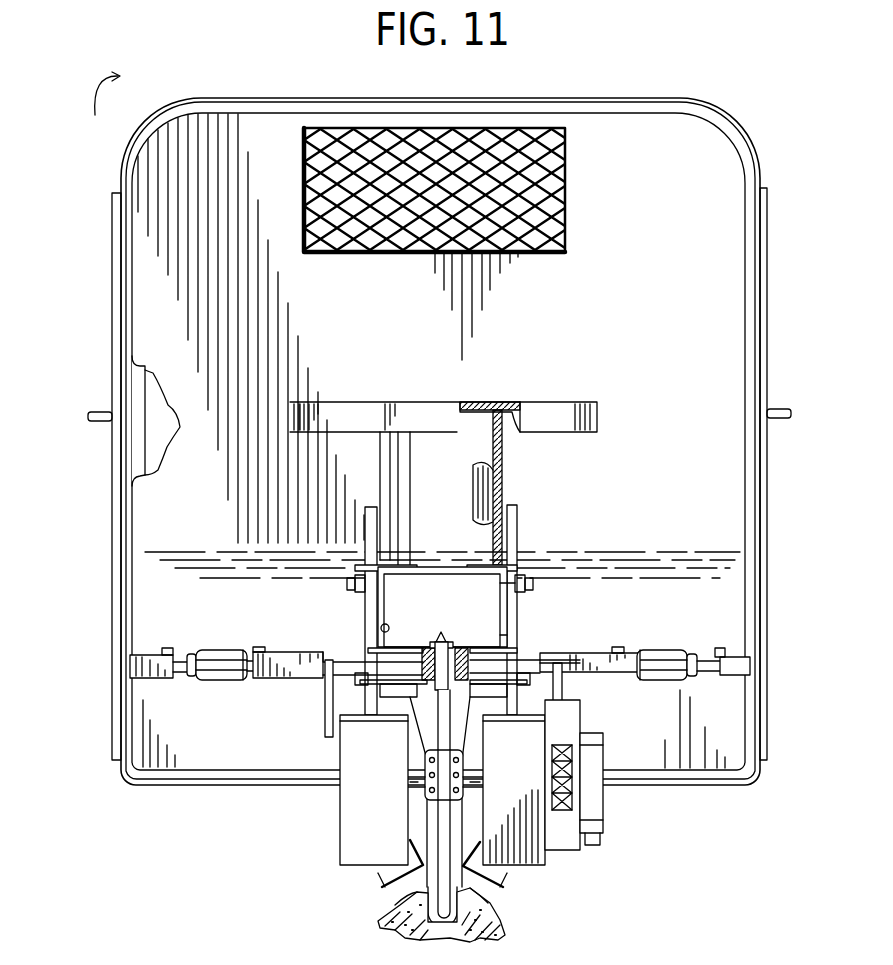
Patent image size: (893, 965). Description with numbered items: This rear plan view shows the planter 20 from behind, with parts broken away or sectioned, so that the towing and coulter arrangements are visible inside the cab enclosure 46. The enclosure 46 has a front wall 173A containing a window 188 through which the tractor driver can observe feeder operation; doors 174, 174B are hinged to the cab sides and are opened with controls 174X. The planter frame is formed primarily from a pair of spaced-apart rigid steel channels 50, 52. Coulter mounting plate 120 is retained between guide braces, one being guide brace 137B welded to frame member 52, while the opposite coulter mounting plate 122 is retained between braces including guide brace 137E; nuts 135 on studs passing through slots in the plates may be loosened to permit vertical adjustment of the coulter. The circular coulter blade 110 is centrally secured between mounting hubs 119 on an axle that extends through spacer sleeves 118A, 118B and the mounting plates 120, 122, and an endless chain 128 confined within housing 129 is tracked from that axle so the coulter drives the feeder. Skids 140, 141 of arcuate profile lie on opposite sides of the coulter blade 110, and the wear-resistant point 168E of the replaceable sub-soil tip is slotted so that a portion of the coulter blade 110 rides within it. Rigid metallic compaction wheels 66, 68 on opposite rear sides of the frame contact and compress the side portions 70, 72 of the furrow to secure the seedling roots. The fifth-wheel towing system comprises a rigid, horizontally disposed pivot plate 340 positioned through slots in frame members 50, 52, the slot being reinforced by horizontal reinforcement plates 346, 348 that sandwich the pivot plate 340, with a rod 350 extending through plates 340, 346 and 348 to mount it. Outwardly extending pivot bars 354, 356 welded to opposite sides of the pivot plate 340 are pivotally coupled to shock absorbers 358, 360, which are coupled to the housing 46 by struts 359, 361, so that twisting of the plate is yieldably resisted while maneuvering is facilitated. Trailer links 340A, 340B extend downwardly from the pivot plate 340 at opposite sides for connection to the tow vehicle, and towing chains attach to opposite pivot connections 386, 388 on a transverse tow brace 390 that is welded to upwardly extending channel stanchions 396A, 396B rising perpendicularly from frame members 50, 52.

The planter 20 is at (88, 77).
The cab enclosure 46 is at (757, 111).
The window 188 is at (566, 190).
The door 174 is at (112, 292).
The door 174B is at (769, 254).
The controls 174X is at (790, 418).
The front wall 173A is at (670, 316).
The pivot connection 386 is at (302, 405).
The transverse tow brace 390 is at (362, 415).
The pivot connection 388 is at (598, 410).
The channel stanchion 396A is at (397, 457).
The channel stanchion 396B is at (493, 475).
The coulter mounting plate 120 is at (363, 506).
The coulter mounting plate 122 is at (513, 506).
The nut 135 is at (533, 590).
The guide brace 137B is at (372, 607).
The guide brace 137E is at (515, 615).
The steel channel 52 is at (381, 631).
The steel channel 50 is at (508, 637).
The pivot plate 340 is at (388, 667).
The rod 350 is at (445, 645).
The shock absorber 358 is at (208, 655).
The shock absorber 360 is at (673, 655).
The pivot bar 354 is at (280, 650).
The pivot bar 356 is at (597, 662).
The strut 359 is at (133, 660).
The strut 361 is at (750, 662).
The horizontal reinforcement plate 348 is at (557, 668).
The horizontal reinforcement plate 346 is at (385, 682).
The trailer link 340A is at (562, 718).
The trailer link 340B is at (328, 737).
The mounting hub 119 is at (425, 763).
The spacer sleeve 118A is at (474, 777).
The spacer sleeve 118B is at (407, 823).
The skid 141 is at (372, 760).
The skid 140 is at (515, 760).
The endless chain 128 is at (578, 780).
The housing 129 is at (590, 836).
The wheel 68 is at (388, 877).
The wheel 66 is at (502, 868).
The side portion 70 is at (395, 897).
The side portion 72 is at (487, 895).
The coulter blade 110 is at (482, 903).
The wear-resistant point 168E is at (418, 926).